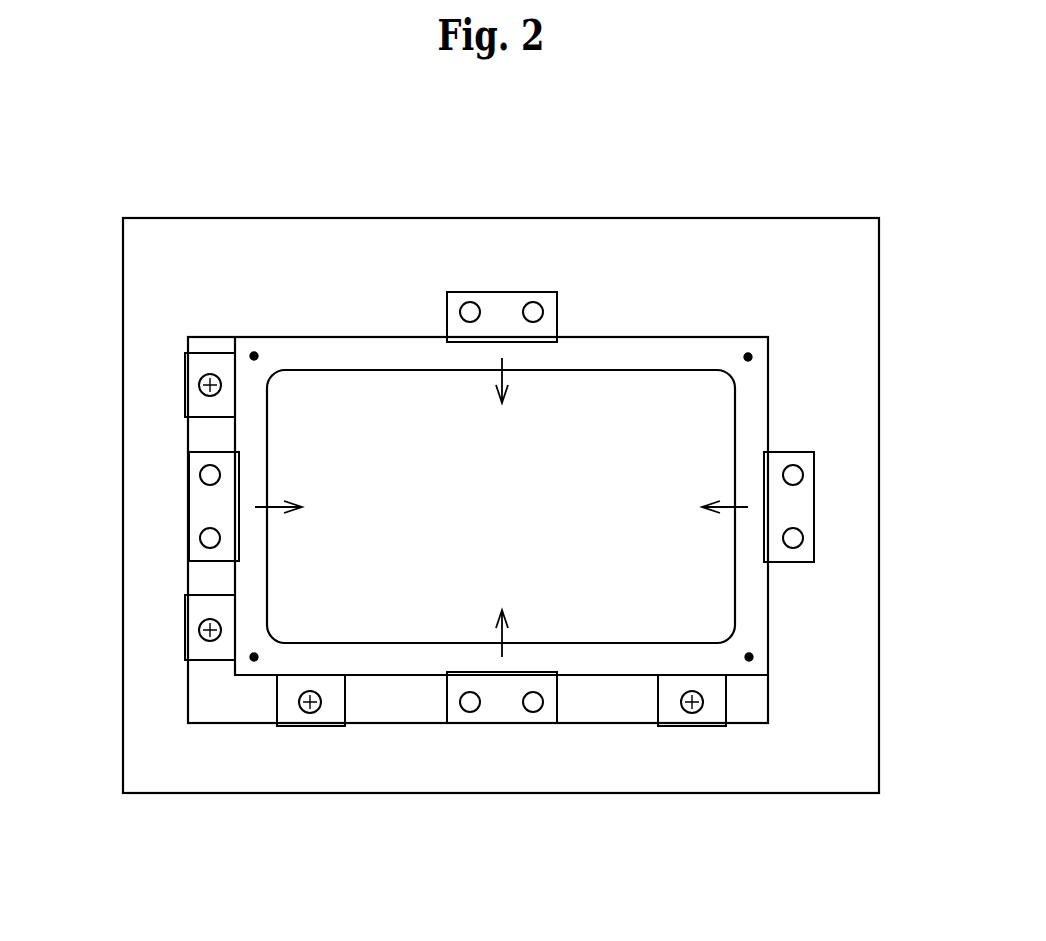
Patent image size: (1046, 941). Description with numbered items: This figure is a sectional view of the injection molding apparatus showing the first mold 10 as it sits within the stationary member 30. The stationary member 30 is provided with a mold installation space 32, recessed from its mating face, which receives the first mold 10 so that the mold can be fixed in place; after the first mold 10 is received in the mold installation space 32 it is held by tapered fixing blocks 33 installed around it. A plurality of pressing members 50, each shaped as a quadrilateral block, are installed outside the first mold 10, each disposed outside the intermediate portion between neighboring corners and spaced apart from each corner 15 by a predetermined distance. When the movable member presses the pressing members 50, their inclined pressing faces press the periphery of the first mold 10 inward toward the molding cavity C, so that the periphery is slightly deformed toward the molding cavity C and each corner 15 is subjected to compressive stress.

The first mold 10 is at (363, 347).
The corner 15 is at (252, 660).
The stationary member 30 is at (687, 238).
The mold installation space 32 is at (418, 722).
The tapered fixing block 33 is at (190, 385).
The pressing member 50 is at (503, 303).
The molding cavity C is at (603, 598).